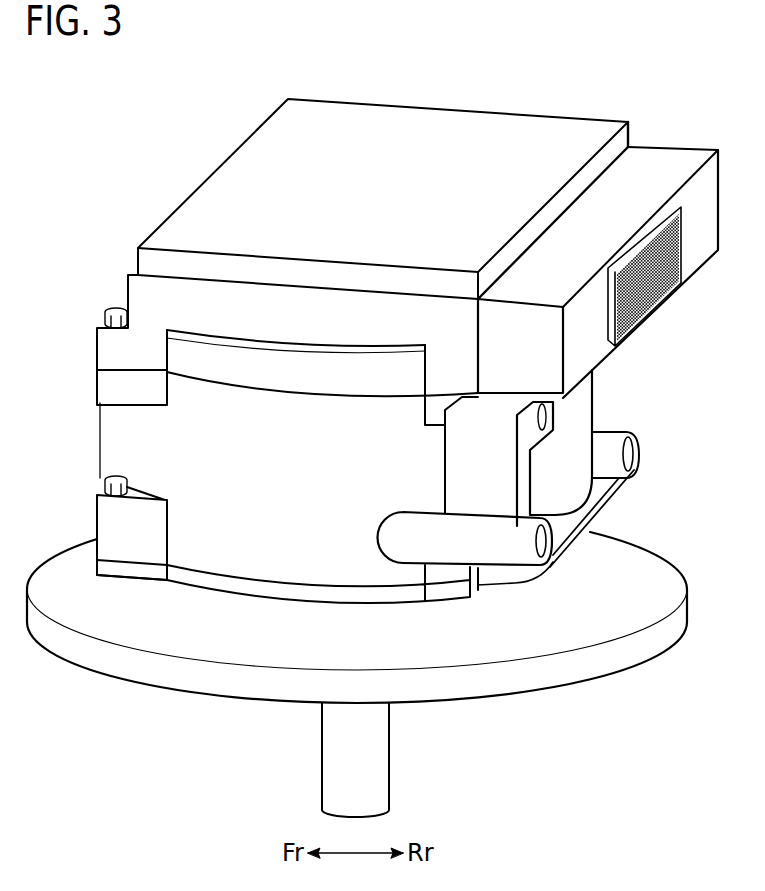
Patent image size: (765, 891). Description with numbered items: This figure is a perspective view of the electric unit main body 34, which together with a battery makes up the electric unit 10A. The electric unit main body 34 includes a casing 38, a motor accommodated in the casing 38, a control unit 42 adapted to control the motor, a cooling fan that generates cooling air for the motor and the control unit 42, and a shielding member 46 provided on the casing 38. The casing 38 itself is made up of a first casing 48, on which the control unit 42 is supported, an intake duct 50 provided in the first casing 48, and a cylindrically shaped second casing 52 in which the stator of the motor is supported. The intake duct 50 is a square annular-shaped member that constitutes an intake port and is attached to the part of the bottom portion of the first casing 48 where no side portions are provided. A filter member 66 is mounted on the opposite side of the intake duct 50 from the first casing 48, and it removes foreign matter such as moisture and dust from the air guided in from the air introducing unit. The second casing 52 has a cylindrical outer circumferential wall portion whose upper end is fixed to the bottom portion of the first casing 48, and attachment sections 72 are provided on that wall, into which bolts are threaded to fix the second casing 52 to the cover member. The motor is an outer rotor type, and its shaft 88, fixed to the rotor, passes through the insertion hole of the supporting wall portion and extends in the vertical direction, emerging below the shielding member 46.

The electric unit main body 34 is at (69, 110).
The electric unit 10A is at (118, 110).
The control unit 42 is at (510, 140).
The intake duct 50 is at (668, 162).
The filter member 66 is at (651, 318).
The casing 38 is at (93, 295).
The first casing 48 is at (108, 347).
The second casing 52 is at (108, 390).
The attachment sections 72 is at (610, 445).
The shielding member 46 is at (152, 672).
The shaft 88 is at (376, 767).